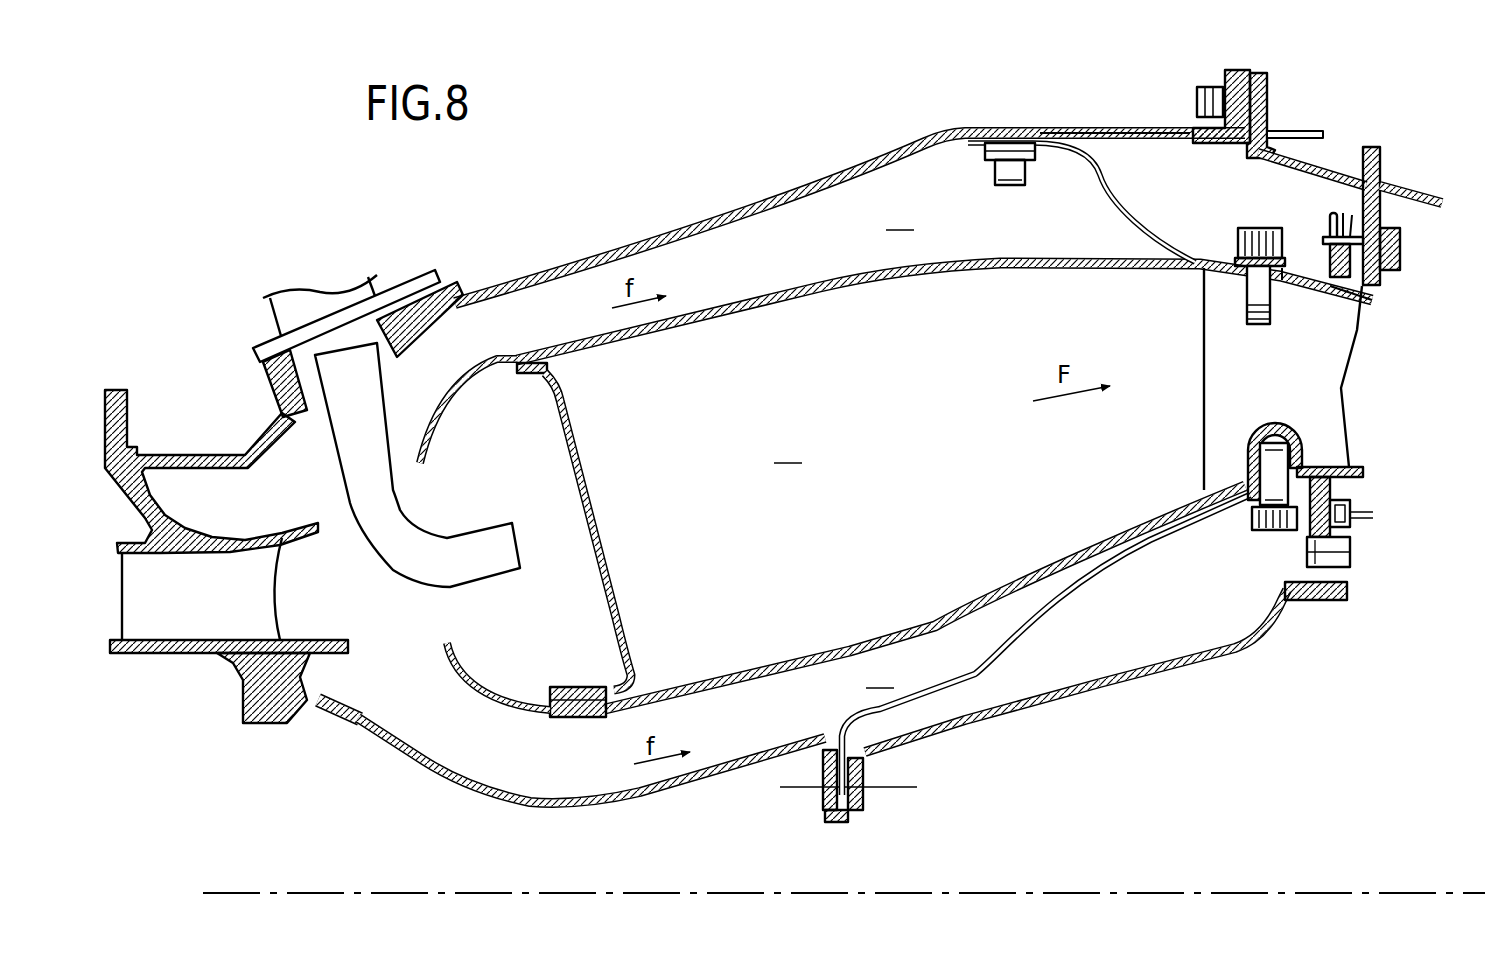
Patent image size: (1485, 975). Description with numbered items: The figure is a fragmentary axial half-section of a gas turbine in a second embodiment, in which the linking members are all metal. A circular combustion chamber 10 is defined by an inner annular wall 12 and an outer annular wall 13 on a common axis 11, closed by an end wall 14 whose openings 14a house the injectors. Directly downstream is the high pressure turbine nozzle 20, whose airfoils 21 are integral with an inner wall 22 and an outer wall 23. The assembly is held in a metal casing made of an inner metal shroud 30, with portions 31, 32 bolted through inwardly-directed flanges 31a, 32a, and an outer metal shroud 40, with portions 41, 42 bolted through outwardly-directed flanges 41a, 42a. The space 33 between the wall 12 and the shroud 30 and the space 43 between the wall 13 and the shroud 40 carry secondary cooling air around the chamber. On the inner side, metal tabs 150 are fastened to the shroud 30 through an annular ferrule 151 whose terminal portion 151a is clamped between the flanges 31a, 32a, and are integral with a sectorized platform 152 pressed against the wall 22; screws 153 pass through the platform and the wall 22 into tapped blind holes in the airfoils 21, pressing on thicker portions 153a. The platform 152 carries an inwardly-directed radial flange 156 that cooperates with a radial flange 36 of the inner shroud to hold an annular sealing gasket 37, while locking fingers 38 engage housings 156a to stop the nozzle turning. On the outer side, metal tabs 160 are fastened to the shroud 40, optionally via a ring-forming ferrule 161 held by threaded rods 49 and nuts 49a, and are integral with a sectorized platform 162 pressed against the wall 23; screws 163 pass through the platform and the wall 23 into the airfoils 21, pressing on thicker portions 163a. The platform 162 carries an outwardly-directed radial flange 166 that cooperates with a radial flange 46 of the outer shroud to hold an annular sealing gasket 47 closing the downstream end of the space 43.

The combustion chamber 10 is at (789, 449).
The axis 11 is at (305, 893).
The inner annular wall 12 is at (850, 637).
The outer annular wall 13 is at (800, 298).
The end wall 14 is at (573, 407).
The openings 14a is at (596, 535).
The high pressure turbine nozzle 20 is at (1338, 388).
The airfoils 21 is at (1237, 366).
The inner wall 22 is at (1245, 477).
The outer wall 23 is at (1296, 302).
The inner metal shroud 30 is at (1143, 687).
The inner shroud portion 31 is at (598, 805).
The inwardly-directed flange 31a is at (803, 803).
The inner shroud portion 32 is at (963, 723).
The inwardly-directed flange 32a is at (863, 800).
The space 33 is at (881, 674).
The radial flange 36 is at (1353, 594).
The annular sealing gasket 37 is at (1357, 505).
The locking fingers 38 is at (1333, 555).
The outer metal shroud 40 is at (797, 178).
The outer shroud portion 41 is at (1127, 132).
The outwardly-directed flange 41a is at (1228, 74).
The outer shroud portion 42 is at (1297, 142).
The outwardly-directed flange 42a is at (1268, 98).
The space 43 is at (901, 216).
The radial flange 46 is at (1367, 238).
The annular sealing gasket 47 is at (1381, 218).
The threaded rods 49 is at (1016, 186).
The nuts 49a is at (991, 176).
The metal tabs 150 is at (1047, 620).
The annular ferrule 151 is at (845, 720).
The terminal portion 151a is at (867, 750).
The sectorized platform 152 is at (1230, 513).
The screws 153 is at (1270, 537).
The thicker portions 153a is at (1300, 463).
The radial flange 156 is at (1298, 540).
The housings 156a is at (1317, 600).
The metal tabs 160 is at (1113, 204).
The ferrule 161 is at (966, 139).
The sectorized platform 162 is at (1262, 312).
The screws 163 is at (1255, 228).
The thicker portions 163a is at (1279, 270).
The radial flange 166 is at (1375, 298).